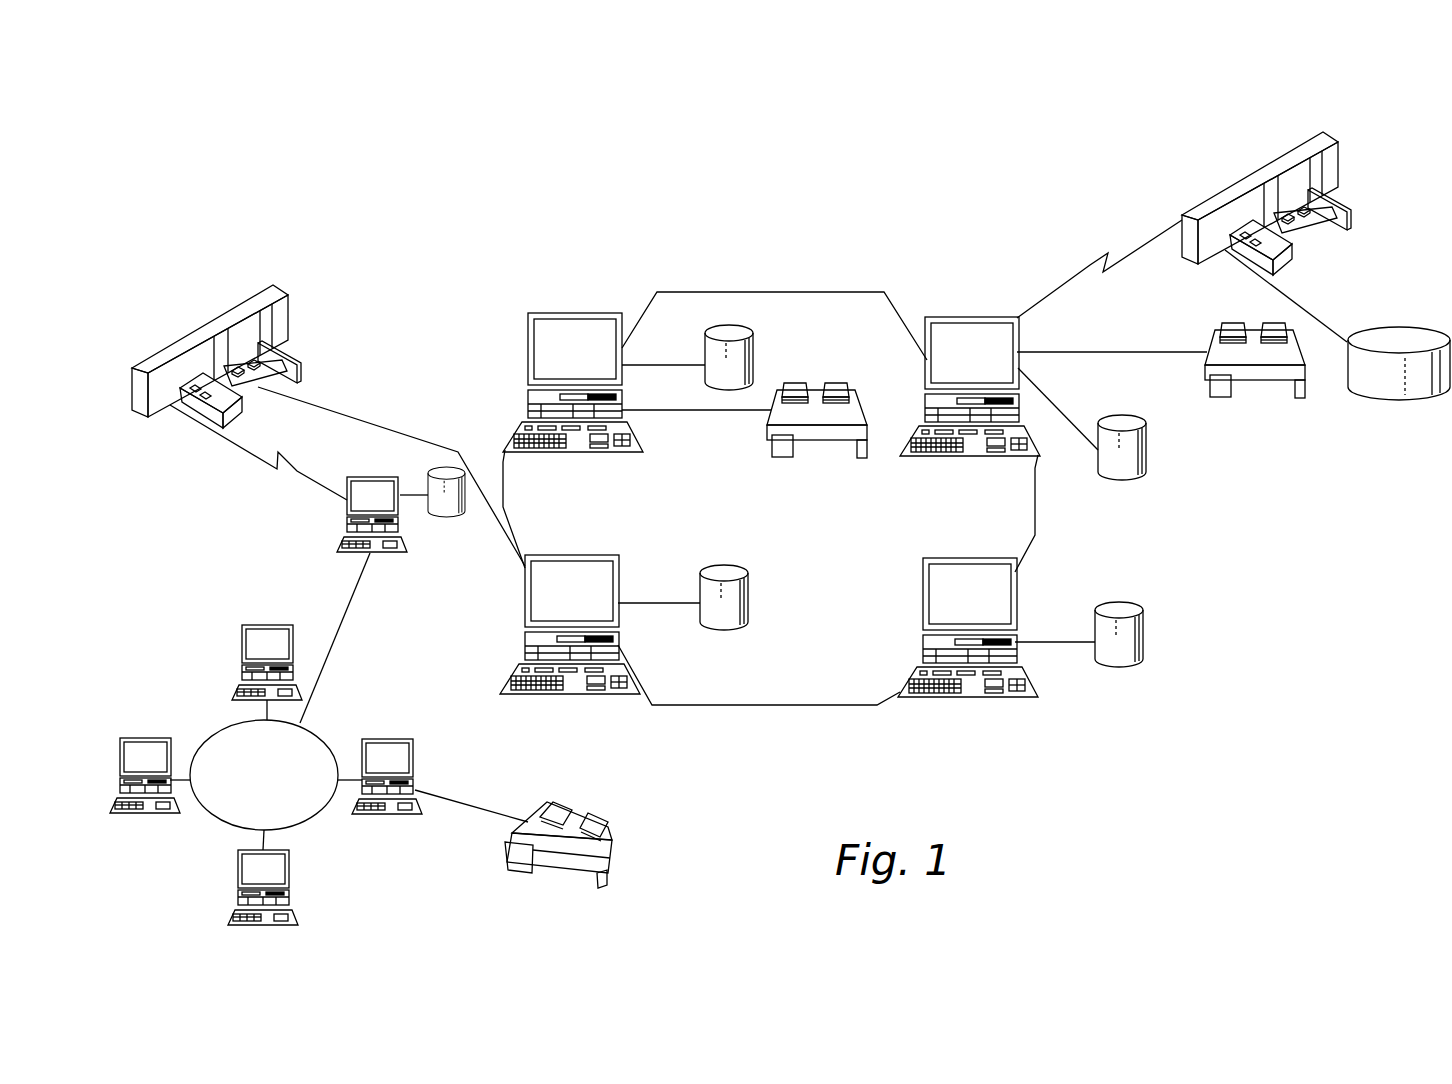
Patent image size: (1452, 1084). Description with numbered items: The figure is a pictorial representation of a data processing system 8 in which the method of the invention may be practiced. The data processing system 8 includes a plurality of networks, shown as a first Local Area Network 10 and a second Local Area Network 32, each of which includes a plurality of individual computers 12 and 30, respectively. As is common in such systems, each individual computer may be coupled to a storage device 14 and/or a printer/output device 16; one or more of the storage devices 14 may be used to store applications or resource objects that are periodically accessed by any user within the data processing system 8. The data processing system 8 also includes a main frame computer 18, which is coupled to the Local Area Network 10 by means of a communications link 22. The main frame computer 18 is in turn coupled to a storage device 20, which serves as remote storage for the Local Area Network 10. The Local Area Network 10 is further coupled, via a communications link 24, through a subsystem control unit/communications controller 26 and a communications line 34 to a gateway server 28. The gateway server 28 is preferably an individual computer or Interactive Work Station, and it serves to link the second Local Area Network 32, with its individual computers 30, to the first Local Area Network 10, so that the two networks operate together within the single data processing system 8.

The data processing system 8 is at (806, 250).
The Local Area Network 10 is at (793, 707).
The individual computers 12 is at (600, 313).
The storage device 14 is at (753, 335).
The printer/output device 16 is at (815, 397).
The main frame computer 18 is at (1262, 172).
The storage device 20 is at (1418, 333).
The communications link 22 is at (1140, 247).
The communications link 24 is at (380, 425).
The subsystem control unit/communications controller 26 is at (288, 295).
The gateway server 28 is at (373, 477).
The individual computers 30 is at (280, 625).
The Local Area Network 32 is at (217, 820).
The communications line 34 is at (300, 473).